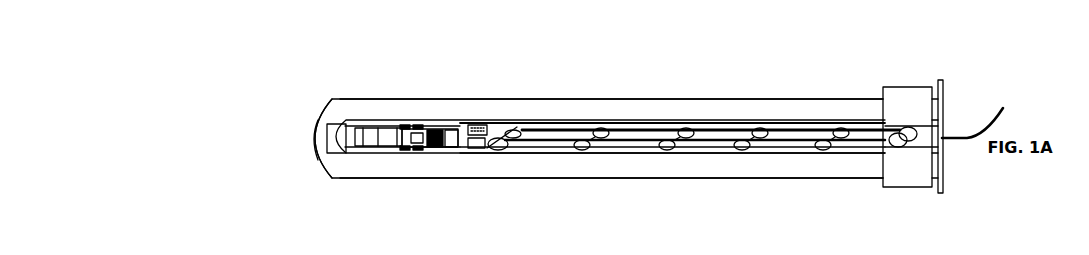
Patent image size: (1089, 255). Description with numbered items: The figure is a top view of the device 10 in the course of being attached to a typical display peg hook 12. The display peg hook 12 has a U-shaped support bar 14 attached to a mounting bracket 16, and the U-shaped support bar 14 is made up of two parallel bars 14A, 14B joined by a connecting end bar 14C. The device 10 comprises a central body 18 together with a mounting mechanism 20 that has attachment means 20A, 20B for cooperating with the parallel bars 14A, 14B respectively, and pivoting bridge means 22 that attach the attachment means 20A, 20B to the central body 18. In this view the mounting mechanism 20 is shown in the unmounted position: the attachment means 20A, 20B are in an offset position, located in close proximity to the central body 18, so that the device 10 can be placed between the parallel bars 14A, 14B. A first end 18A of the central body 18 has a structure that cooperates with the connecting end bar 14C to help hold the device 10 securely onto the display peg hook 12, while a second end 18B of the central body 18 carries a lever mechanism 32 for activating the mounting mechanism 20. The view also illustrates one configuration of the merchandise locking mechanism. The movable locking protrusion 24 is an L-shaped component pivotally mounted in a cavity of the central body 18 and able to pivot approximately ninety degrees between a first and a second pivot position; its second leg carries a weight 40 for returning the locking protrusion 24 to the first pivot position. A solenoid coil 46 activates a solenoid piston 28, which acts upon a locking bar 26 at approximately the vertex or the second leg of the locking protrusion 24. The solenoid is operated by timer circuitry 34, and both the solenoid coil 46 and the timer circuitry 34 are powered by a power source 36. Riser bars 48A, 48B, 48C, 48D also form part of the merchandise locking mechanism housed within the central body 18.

The device 10 is at (306, 106).
The display peg hook 12 is at (322, 176).
The U-shaped support bar 14 is at (355, 98).
The parallel bar 14A is at (518, 102).
The parallel bar 14B is at (527, 174).
The connecting end bar 14C is at (310, 145).
The mounting bracket 16 is at (947, 131).
The central body 18 is at (345, 148).
The first end of central body 18A is at (330, 131).
The second end of central body 18B is at (992, 114).
The mounting mechanism 20 is at (680, 132).
The attachment means 20A is at (583, 122).
The attachment means 20B is at (607, 151).
The pivoting bridge means 22 is at (833, 148).
The movable locking protrusion 24 is at (375, 136).
The locking bar 26 is at (424, 124).
The solenoid piston 28 is at (455, 147).
The lever mechanism 32 is at (912, 84).
The timer circuitry 34 is at (481, 124).
The power source 36 is at (481, 148).
The weight 40 is at (422, 144).
The solenoid coil 46 is at (435, 147).
The riser bar 48A is at (403, 150).
The riser bar 48B is at (415, 150).
The riser bar 48C is at (404, 125).
The riser bar 48D is at (418, 125).